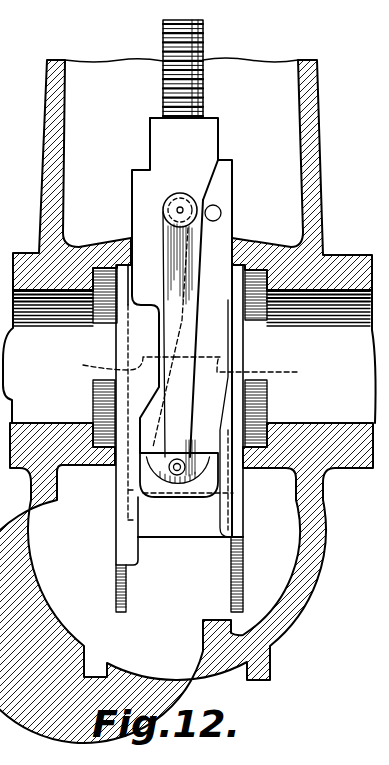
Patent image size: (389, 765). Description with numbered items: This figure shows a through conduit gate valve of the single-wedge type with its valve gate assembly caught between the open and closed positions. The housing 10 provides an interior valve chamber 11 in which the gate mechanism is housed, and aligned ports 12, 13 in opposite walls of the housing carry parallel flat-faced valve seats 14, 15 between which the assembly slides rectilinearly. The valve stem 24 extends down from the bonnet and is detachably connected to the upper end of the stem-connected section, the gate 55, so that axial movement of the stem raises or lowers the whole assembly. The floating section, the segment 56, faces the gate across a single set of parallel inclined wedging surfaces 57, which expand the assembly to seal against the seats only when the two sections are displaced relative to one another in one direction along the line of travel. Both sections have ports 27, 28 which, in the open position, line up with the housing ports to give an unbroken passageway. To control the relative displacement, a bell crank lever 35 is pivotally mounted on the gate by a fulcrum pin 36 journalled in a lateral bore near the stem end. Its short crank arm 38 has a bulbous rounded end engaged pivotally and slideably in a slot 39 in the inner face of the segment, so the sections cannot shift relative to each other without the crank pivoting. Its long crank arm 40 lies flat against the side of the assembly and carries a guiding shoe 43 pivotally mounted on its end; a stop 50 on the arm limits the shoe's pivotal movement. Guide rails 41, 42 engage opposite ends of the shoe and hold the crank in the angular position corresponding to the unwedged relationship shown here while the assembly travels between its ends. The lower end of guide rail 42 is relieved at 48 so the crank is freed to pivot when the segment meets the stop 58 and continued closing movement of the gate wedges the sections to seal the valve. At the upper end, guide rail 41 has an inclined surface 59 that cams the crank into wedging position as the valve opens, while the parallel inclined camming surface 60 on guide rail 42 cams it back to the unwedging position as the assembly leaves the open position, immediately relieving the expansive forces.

The housing 10 is at (42, 163).
The valve chamber 11 is at (282, 145).
The port 12 is at (42, 423).
The port 13 is at (313, 423).
The valve seat 14 is at (100, 348).
The valve seat 15 is at (260, 353).
The valve stem 24 is at (203, 33).
The port 27 is at (117, 366).
The port 28 is at (244, 369).
The bell crank lever 35 is at (159, 230).
The fulcrum pin 36 is at (183, 193).
The short crank arm 38 is at (230, 200).
The slot 39 is at (222, 213).
The long crank arm 40 is at (177, 398).
The guide rail 41 is at (137, 500).
The guide rail 42 is at (220, 512).
The guiding shoe 43 is at (176, 487).
The relieved portion 48 is at (242, 557).
The stop 50 is at (93, 412).
The gate 55 is at (132, 193).
The segment 56 is at (222, 183).
The wedging surfaces 57 is at (192, 297).
The stop 58 is at (215, 620).
The inclined surface 59 is at (110, 387).
The inclined camming surface 60 is at (240, 414).